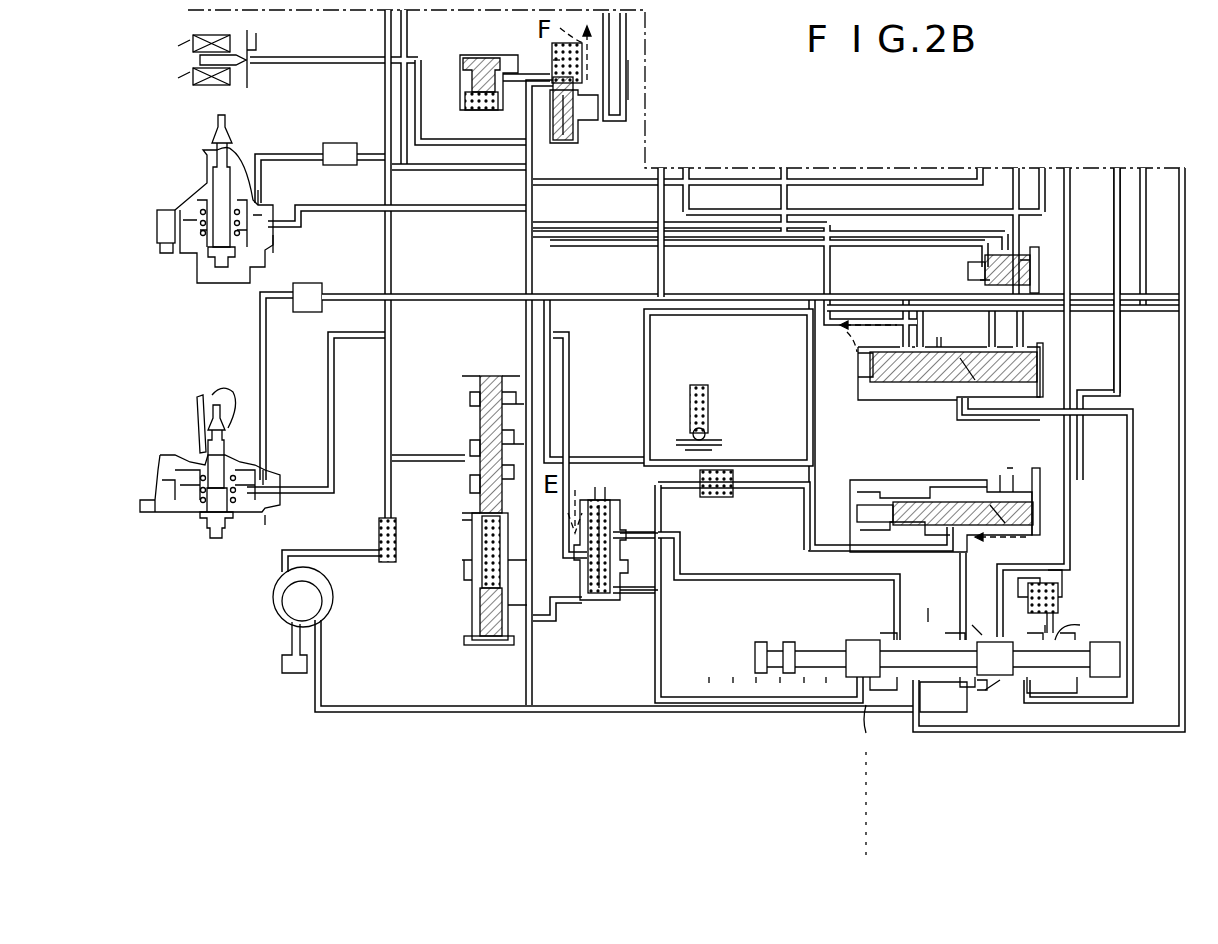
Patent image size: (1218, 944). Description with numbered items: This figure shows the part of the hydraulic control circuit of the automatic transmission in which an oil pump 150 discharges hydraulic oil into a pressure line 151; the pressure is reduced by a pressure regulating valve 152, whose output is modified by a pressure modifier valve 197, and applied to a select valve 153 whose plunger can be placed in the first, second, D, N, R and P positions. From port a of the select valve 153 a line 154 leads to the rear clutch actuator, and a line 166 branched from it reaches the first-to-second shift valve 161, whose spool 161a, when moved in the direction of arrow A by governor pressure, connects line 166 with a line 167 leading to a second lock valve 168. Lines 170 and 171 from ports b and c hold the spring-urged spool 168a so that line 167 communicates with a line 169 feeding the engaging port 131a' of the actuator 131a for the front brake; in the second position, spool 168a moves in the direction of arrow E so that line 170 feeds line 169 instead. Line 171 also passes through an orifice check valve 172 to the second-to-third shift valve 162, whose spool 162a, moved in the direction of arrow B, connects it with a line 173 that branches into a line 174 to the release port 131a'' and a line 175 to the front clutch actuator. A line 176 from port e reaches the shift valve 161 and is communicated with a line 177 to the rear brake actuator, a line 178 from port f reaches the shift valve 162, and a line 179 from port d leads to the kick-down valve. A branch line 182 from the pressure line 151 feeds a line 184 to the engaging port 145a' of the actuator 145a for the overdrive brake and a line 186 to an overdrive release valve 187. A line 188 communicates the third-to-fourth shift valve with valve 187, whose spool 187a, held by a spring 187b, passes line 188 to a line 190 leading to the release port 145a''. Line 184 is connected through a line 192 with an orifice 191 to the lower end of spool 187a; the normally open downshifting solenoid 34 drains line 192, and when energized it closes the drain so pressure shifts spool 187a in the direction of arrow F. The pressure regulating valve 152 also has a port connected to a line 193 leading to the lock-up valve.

The downshifting solenoid 34 is at (192, 36).
The actuator for the overdrive brake 145a is at (197, 199).
The engaging port of the overdrive brake actuator 145a' is at (325, 241).
The release port of the overdrive brake actuator 145a'' is at (305, 189).
The actuator for the front brake 131a is at (203, 463).
The engaging port of the front brake actuator 131a' is at (309, 522).
The release port of the front brake actuator 131a'' is at (304, 449).
The oil pump 150 is at (270, 590).
The pressure line 151 is at (395, 705).
The pressure regulating valve 152 is at (452, 585).
The select valve 153 is at (746, 664).
The line 154 is at (1184, 602).
The 1-2 shift valve 161 is at (911, 414).
The spool of the 1-2 shift valve 161a is at (972, 375).
The 2-3 shift valve 162 is at (958, 465).
The spool of the 2-3 shift valve 162a is at (997, 505).
The line 166 is at (905, 293).
The line 167 is at (763, 318).
The second lock valve 168 is at (581, 587).
The spool of the second lock valve 168a is at (603, 507).
The line 169 is at (571, 418).
The line 170 is at (767, 576).
The line 171 is at (656, 652).
The orifice check valve 172 is at (712, 498).
The line 173 is at (807, 498).
The line 174 is at (597, 300).
The line 175 is at (666, 270).
The line 176 is at (1118, 518).
The line 177 is at (1119, 355).
The line 178 is at (1027, 573).
The line 179 is at (1070, 497).
The branch line 182 is at (526, 259).
The line 184 is at (413, 214).
The line 186 is at (535, 128).
The overdrive release valve 187 is at (530, 53).
The spool of the overdrive release valve 187a is at (567, 140).
The spring 187b is at (539, 62).
The line 188 is at (628, 100).
The line 190 is at (458, 172).
The orifice 191 is at (470, 153).
The line 192 is at (384, 124).
The line 193 is at (415, 452).
The pressure modifier valve 197 is at (1009, 247).